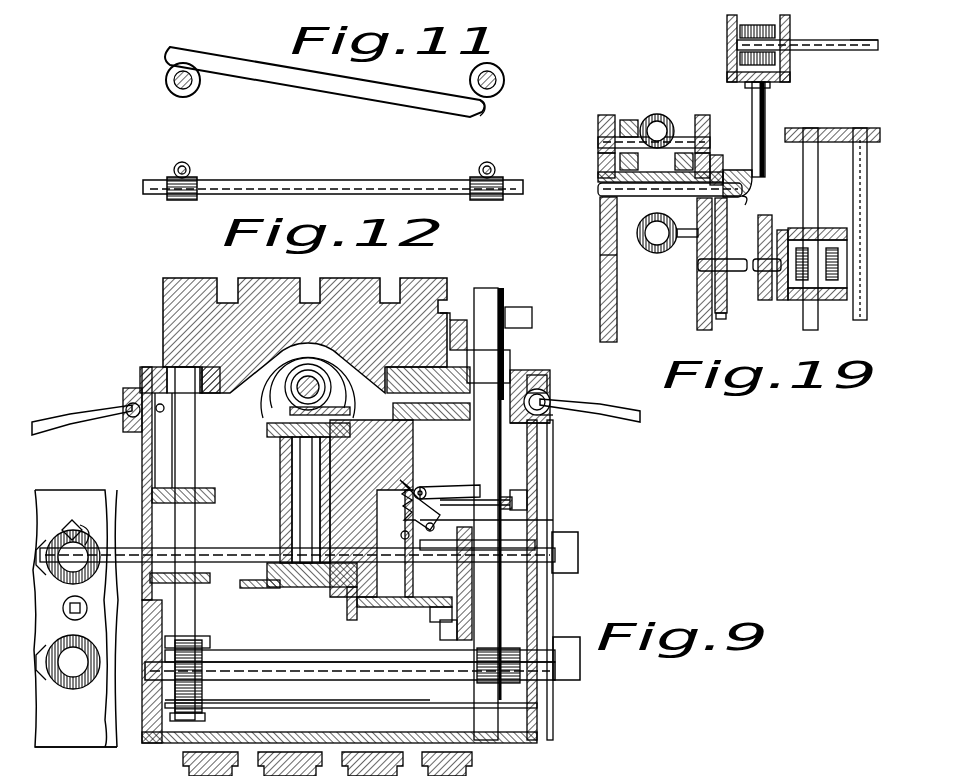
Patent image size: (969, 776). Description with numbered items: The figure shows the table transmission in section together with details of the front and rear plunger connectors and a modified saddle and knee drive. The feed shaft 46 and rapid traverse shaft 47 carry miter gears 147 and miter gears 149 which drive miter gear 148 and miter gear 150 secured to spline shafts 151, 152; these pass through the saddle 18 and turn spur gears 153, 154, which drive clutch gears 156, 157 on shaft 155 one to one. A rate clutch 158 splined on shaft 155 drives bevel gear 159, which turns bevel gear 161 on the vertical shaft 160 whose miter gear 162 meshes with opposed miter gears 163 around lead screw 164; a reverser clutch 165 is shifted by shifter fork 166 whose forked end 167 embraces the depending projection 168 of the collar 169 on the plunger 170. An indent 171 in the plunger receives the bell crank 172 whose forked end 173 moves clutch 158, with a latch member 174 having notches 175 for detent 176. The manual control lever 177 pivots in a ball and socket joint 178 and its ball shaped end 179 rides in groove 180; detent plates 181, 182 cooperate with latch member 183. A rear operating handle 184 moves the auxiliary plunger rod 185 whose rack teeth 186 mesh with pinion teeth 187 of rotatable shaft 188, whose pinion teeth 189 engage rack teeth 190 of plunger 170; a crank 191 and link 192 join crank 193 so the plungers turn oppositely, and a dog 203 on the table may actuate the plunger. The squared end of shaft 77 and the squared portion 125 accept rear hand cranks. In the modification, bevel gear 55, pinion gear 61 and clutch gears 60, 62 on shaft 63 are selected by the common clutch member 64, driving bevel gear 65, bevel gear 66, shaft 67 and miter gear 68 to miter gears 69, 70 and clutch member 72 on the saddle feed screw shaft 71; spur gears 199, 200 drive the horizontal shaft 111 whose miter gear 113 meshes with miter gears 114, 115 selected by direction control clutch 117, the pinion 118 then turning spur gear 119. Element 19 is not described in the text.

In FIG. 9, the saddle 18 is at (553, 720).
In FIG. 9, the bracket 19 is at (458, 320).
In FIG. 19, the feed shaft 46 is at (652, 114).
In FIG. 19, the rapid traverse shaft 47 is at (660, 245).
In FIG. 19, the bevel gear 55 is at (630, 118).
In FIG. 19, the clutch gear 60 is at (602, 230).
In FIG. 19, the pinion gear 61 is at (665, 250).
In FIG. 19, the clutch gear 62 is at (700, 118).
In FIG. 19, the shaft 63 is at (600, 190).
In FIG. 19, the clutch member 64 is at (600, 255).
In FIG. 19, the bevel gear 65 is at (746, 203).
In FIG. 19, the bevel gear 66 is at (790, 160).
In FIG. 19, the shaft 67 is at (766, 115).
In FIG. 19, the miter gear 68 is at (780, 90).
In FIG. 19, the miter gear 69 is at (728, 24).
In FIG. 19, the miter gear 70 is at (850, 35).
In FIG. 19, the saddle feed screw shaft 71 is at (732, 48).
In FIG. 19, the clutch member 72 is at (770, 28).
In FIG. 9, the shaft 77 is at (92, 590).
In FIG. 19, the horizontal shaft 111 is at (740, 258).
In FIG. 19, the miter gear 113 is at (785, 300).
In FIG. 19, the miter gear 114 is at (836, 238).
In FIG. 19, the miter gear 115 is at (812, 320).
In FIG. 19, the direction control clutch 117 is at (860, 318).
In FIG. 19, the pinion 118 is at (800, 128).
In FIG. 19, the spur gear 119 is at (866, 125).
In FIG. 9, the squared portion 125 is at (45, 520).
In FIG. 9, the miter gear 147 is at (97, 530).
In FIG. 9, the miter gear 148 is at (60, 520).
In FIG. 9, the miter gear 149 is at (85, 690).
In FIG. 9, the miter gear 150 is at (55, 700).
In FIG. 9, the spline shaft 151 is at (190, 548).
In FIG. 9, the spline shaft 152 is at (215, 576).
In FIG. 9, the spur gear 153 is at (414, 446).
In FIG. 9, the spur gear 154 is at (440, 705).
In FIG. 9, the shaft 155 is at (370, 608).
In FIG. 9, the clutch gear 156 is at (430, 620).
In FIG. 9, the clutch gear 157 is at (455, 582).
In FIG. 9, the rate clutch 158 is at (380, 682).
In FIG. 9, the bevel gear 159 is at (350, 608).
In FIG. 9, the vertical shaft 160 is at (298, 480).
In FIG. 9, the bevel gear 161 is at (280, 585).
In FIG. 9, the miter gear 162 is at (280, 437).
In FIG. 9, the miter gear 163 is at (290, 385).
In FIG. 9, the lead screw 164 is at (292, 400).
In FIG. 9, the reverser clutch 165 is at (300, 410).
In FIG. 9, the shifter fork 166 is at (355, 413).
In FIG. 9, the forked end 167 is at (548, 430).
In FIG. 9, the depending projection 168 is at (540, 425).
In FIG. 9, the collar 169 is at (462, 400).
In FIG. 11, the plunger 170 is at (488, 78).
In FIG. 9, the plunger 170 is at (508, 290).
In FIG. 9, the indent 171 is at (525, 492).
In FIG. 9, the bell crank 172 is at (425, 487).
In FIG. 9, the forked end 173 is at (520, 583).
In FIG. 9, the latch member 174 is at (432, 490).
In FIG. 9, the notches 175 is at (580, 545).
In FIG. 9, the detent 176 is at (553, 520).
In FIG. 9, the manual control lever 177 is at (640, 410).
In FIG. 9, the ball and socket joint 178 is at (542, 392).
In FIG. 9, the ball shaped end 179 is at (553, 416).
In FIG. 9, the groove 180 is at (535, 378).
In FIG. 9, the detent plate 181 is at (510, 500).
In FIG. 9, the detent plate 182 is at (515, 505).
In FIG. 9, the latch member 183 is at (512, 505).
In FIG. 9, the operating handle 184 is at (75, 395).
In FIG. 11, the auxiliary plunger rod 185 is at (185, 92).
In FIG. 12, the auxiliary plunger rod 185 is at (190, 165).
In FIG. 9, the auxiliary plunger rod 185 is at (195, 532).
In FIG. 9, the rack teeth 186 is at (205, 640).
In FIG. 12, the pinion teeth 187 is at (182, 200).
In FIG. 9, the pinion teeth 187 is at (205, 695).
In FIG. 12, the rotatable shaft 188 is at (330, 172).
In FIG. 9, the rotatable shaft 188 is at (306, 680).
In FIG. 12, the pinion teeth 189 is at (480, 200).
In FIG. 9, the pinion teeth 189 is at (520, 680).
In FIG. 9, the rack teeth 190 is at (490, 650).
In FIG. 11, the crank 191 is at (166, 80).
In FIG. 11, the link 192 is at (258, 80).
In FIG. 11, the crank 193 is at (483, 108).
In FIG. 19, the spur gear 199 is at (722, 158).
In FIG. 19, the spur gear 200 is at (722, 319).
In FIG. 9, the dog 203 is at (480, 300).